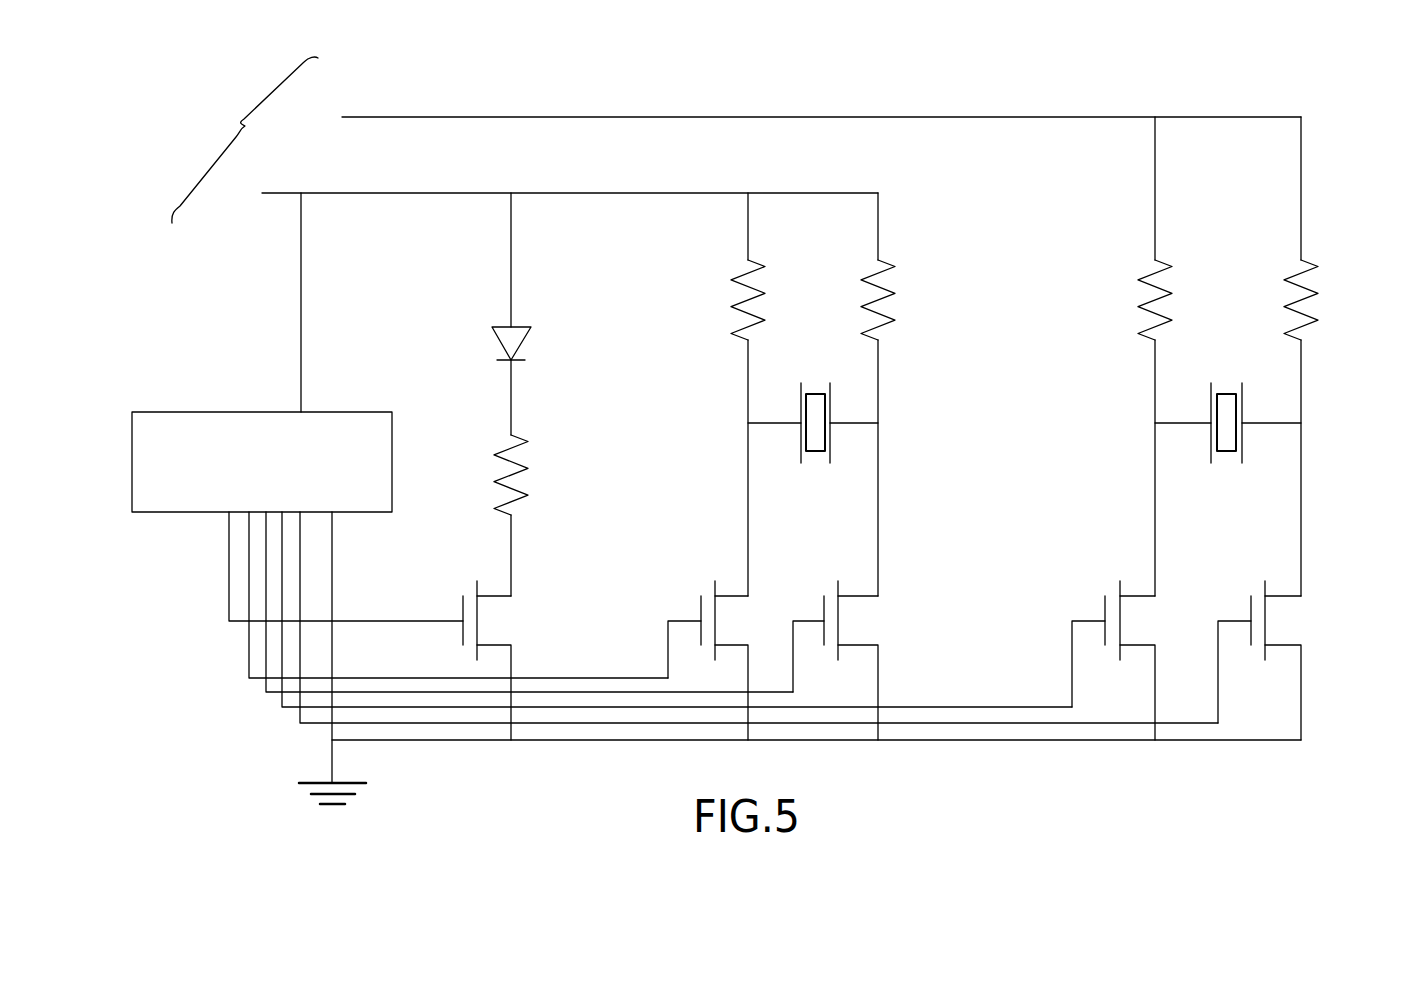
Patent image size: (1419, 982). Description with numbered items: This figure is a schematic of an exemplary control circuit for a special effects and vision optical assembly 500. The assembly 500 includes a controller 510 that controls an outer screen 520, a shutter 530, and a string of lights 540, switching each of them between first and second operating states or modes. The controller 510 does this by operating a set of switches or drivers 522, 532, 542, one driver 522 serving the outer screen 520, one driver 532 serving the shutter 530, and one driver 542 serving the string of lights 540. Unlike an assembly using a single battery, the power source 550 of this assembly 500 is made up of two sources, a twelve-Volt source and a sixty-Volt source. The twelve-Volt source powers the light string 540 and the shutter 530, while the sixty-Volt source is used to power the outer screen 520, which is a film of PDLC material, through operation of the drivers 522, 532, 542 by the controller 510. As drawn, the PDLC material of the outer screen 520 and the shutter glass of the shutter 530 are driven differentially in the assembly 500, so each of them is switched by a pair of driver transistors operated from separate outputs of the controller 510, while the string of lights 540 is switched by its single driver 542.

The optical assembly 500 is at (1178, 90).
The controller 510 is at (175, 512).
The outer screen 520 is at (1210, 408).
The driver 522 is at (1303, 624).
The shutter 530 is at (832, 400).
The driver 532 is at (892, 618).
The string of lights 540 is at (492, 336).
The driver 542 is at (601, 552).
The power source 550 is at (255, 140).